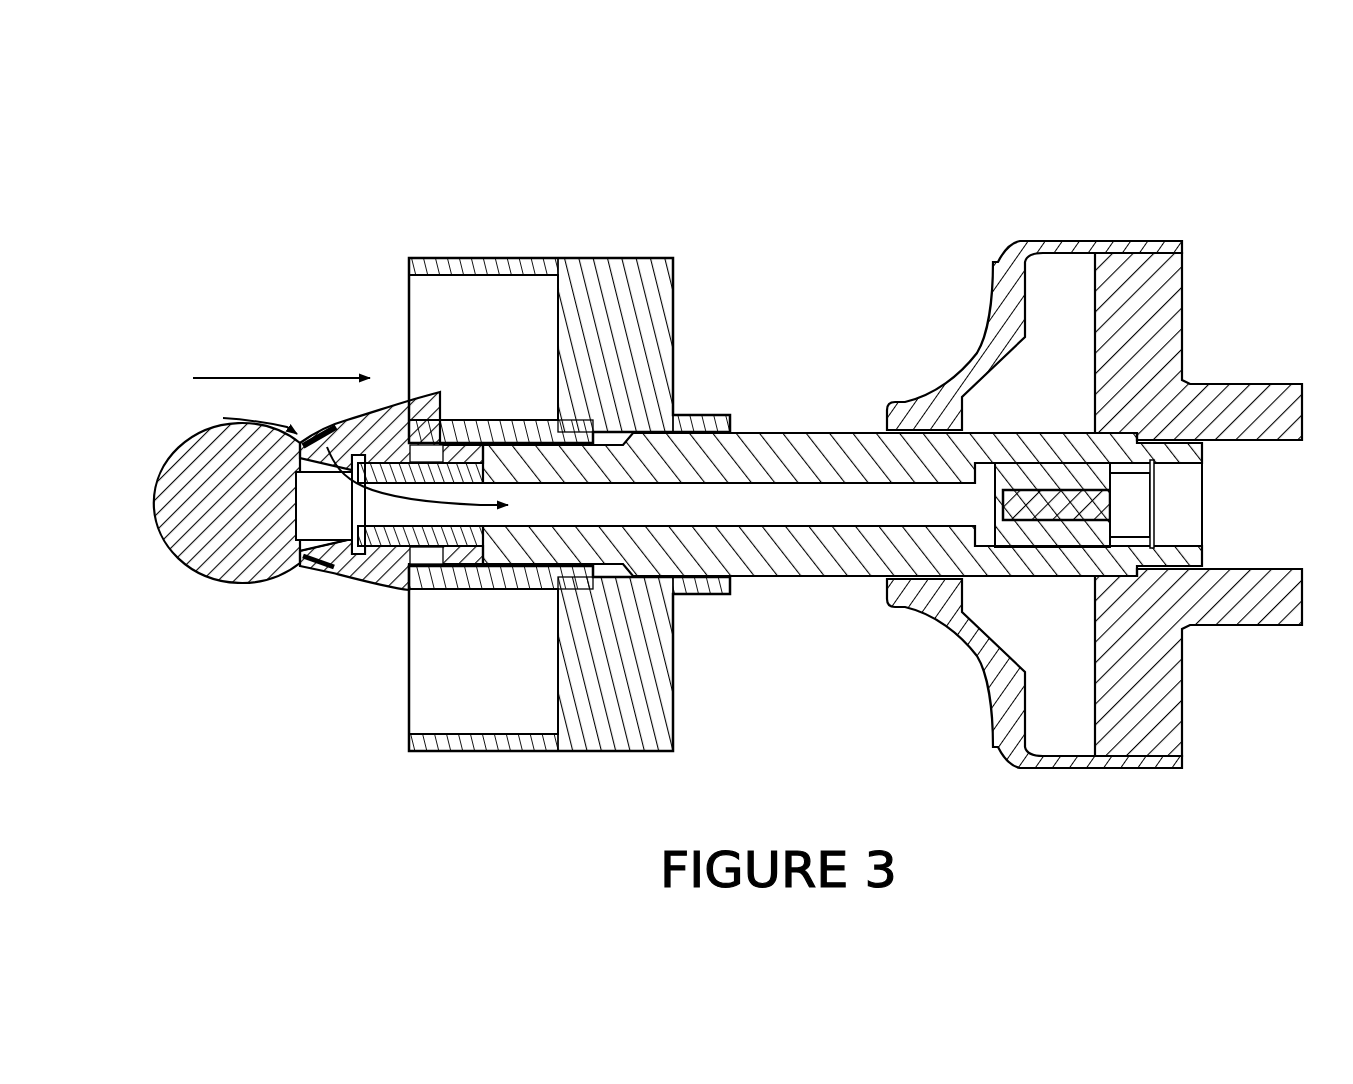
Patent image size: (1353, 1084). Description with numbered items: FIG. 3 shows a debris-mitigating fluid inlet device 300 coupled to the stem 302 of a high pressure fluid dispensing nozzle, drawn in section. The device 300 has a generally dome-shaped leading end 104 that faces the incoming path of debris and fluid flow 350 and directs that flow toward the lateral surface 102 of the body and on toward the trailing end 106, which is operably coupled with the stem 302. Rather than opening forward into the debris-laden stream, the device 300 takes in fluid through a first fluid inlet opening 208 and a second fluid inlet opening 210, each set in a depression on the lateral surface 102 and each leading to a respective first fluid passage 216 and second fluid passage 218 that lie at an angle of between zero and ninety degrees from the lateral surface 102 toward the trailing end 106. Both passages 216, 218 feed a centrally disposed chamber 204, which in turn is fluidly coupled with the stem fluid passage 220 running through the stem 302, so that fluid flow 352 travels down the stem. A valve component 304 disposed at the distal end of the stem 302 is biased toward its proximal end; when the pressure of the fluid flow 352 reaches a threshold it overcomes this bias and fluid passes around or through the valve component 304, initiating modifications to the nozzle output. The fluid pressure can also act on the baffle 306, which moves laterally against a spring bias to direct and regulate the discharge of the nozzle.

The device 300 is at (529, 423).
The fluid flow 350 is at (193, 368).
The fluid flow 352 is at (230, 431).
The leading end 104 is at (156, 541).
The lateral surface 102 is at (233, 650).
The first fluid inlet opening 208 is at (301, 436).
The second fluid inlet opening 210 is at (298, 578).
The second fluid passage 218 is at (300, 553).
The chamber 204 is at (345, 516).
The first fluid passage 216 is at (327, 447).
The trailing end 106 is at (414, 578).
The stem 302 is at (780, 445).
The stem fluid passage 220 is at (582, 516).
The valve component 304 is at (1017, 493).
The baffle 306 is at (998, 258).